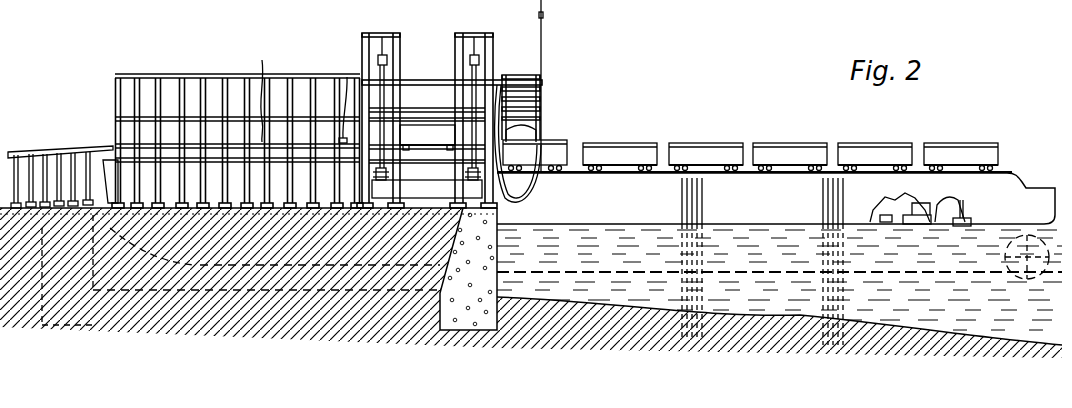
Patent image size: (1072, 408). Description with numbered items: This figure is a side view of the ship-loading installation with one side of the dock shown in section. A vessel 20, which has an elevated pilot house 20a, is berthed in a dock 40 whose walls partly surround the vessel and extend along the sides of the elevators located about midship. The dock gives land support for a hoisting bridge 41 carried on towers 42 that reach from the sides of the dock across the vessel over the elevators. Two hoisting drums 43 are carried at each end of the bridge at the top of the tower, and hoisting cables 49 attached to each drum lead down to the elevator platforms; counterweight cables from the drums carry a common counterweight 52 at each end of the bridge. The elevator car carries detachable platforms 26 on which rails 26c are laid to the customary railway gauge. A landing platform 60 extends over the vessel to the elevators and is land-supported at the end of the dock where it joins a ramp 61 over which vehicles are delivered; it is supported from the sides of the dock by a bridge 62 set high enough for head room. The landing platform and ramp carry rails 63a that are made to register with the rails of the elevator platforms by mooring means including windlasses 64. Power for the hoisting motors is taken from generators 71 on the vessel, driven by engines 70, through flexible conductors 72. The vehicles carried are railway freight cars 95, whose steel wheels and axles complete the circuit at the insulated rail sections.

The vessel 20 is at (1024, 188).
The pilot house 20a is at (522, 80).
The detachable platform 26 is at (404, 196).
The rails 26c is at (443, 155).
The dock 40 is at (499, 210).
The hoisting bridge 41 is at (379, 33).
The towers 42 is at (497, 80).
The hoisting drums 43 is at (387, 58).
The hoisting cables 49 is at (386, 75).
The counterweight 52 is at (408, 187).
The landing platform 60 is at (110, 146).
The ramp 61 is at (30, 152).
The bridge 62 is at (168, 74).
The rails 63a is at (269, 92).
The windlasses 64 is at (340, 100).
The engines 70 is at (918, 206).
The generators 71 is at (880, 210).
The flexible conductors 72 is at (505, 197).
The railway freight cars 95 is at (590, 143).